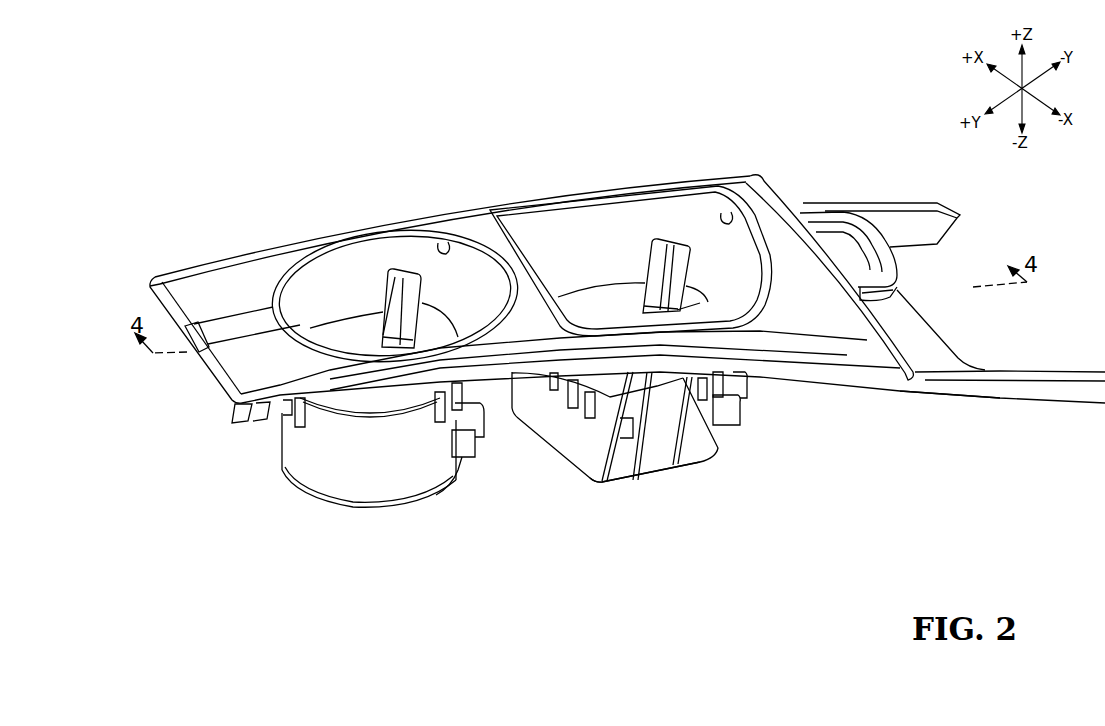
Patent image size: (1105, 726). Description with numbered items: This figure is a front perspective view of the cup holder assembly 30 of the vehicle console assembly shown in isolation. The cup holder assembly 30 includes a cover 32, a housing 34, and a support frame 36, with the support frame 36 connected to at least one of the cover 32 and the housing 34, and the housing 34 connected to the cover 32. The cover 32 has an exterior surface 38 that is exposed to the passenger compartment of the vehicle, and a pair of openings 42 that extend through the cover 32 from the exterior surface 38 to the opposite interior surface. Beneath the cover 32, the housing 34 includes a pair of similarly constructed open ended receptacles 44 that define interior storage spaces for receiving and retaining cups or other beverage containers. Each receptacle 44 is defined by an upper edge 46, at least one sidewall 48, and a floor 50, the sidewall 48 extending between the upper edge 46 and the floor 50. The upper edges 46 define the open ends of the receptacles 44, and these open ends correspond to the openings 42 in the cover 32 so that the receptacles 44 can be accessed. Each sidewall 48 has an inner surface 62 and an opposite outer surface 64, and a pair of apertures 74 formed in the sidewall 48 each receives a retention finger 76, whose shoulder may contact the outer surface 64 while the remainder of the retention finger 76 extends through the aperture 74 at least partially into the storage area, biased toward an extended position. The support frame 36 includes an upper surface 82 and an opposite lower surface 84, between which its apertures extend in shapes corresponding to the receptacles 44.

The cup holder assembly 30 is at (264, 180).
The cover 32 is at (206, 280).
The housing 34 is at (335, 514).
The support frame 36 is at (963, 398).
The exterior surface 38 is at (829, 277).
The openings 42 is at (432, 232).
The open ended receptacles 44 is at (330, 258).
The upper edge 46 is at (446, 246).
The sidewall 48 is at (428, 483).
The floor 50 is at (370, 510).
The inner surface 62 is at (505, 311).
The outer surface 64 is at (515, 433).
The apertures 74 is at (425, 300).
The retention finger 76 is at (432, 306).
The upper surface 82 is at (892, 286).
The lower surface 84 is at (1047, 404).